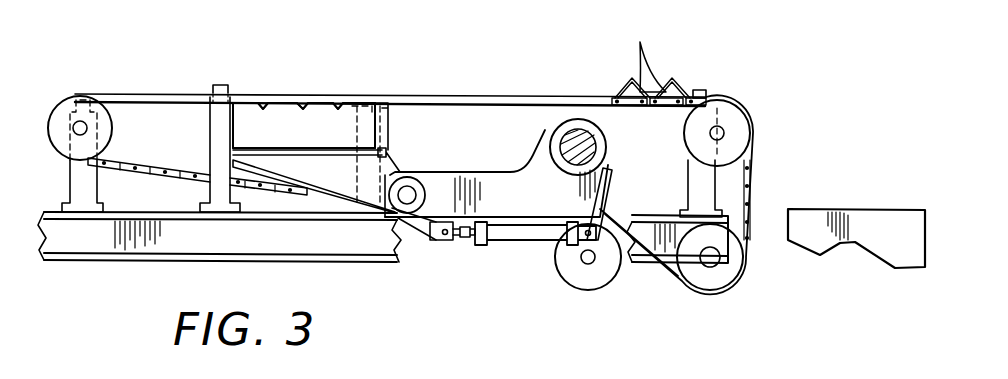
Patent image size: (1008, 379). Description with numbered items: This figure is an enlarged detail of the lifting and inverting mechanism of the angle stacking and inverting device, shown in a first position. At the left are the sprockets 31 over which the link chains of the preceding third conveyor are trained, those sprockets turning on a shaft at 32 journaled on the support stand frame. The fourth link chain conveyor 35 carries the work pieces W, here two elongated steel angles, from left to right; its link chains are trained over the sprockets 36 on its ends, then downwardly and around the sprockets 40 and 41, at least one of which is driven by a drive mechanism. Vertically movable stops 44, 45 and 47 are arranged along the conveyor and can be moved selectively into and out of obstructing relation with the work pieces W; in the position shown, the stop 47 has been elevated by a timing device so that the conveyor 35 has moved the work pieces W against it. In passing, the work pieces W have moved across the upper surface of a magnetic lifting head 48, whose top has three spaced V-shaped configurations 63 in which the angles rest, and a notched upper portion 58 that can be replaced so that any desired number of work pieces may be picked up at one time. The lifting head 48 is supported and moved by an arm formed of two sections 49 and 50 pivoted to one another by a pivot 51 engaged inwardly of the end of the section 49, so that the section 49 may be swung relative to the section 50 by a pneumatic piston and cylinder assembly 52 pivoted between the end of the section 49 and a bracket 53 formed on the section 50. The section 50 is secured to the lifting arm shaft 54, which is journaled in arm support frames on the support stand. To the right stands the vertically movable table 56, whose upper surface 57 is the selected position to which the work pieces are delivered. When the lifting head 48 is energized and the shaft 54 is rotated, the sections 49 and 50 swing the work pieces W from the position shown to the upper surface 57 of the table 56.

The sprockets 31 is at (103, 134).
The pulley shaft 32 is at (77, 131).
The fourth link chain conveyor 35 is at (452, 96).
The sprockets 36 is at (738, 127).
The sprocket 40 is at (728, 265).
The sprocket 41 is at (607, 267).
The vertically movable stop 44 is at (74, 95).
The vertically movable stop 45 is at (223, 89).
The vertically movable stop 47 is at (706, 90).
The magnetic lifting head 48 is at (304, 125).
The arm section 49 is at (333, 183).
The arm section 50 is at (496, 173).
The pivot 51 is at (407, 196).
The pneumatic piston and cylinder assembly 52 is at (512, 241).
The bracket 53 is at (602, 208).
The lifting arm shaft 54 is at (592, 150).
The vertically movable table 56 is at (856, 238).
The upper surface 57 is at (840, 209).
The notched plate 58 is at (322, 105).
The V-shaped configurations 63 is at (303, 104).
The work pieces W is at (640, 42).